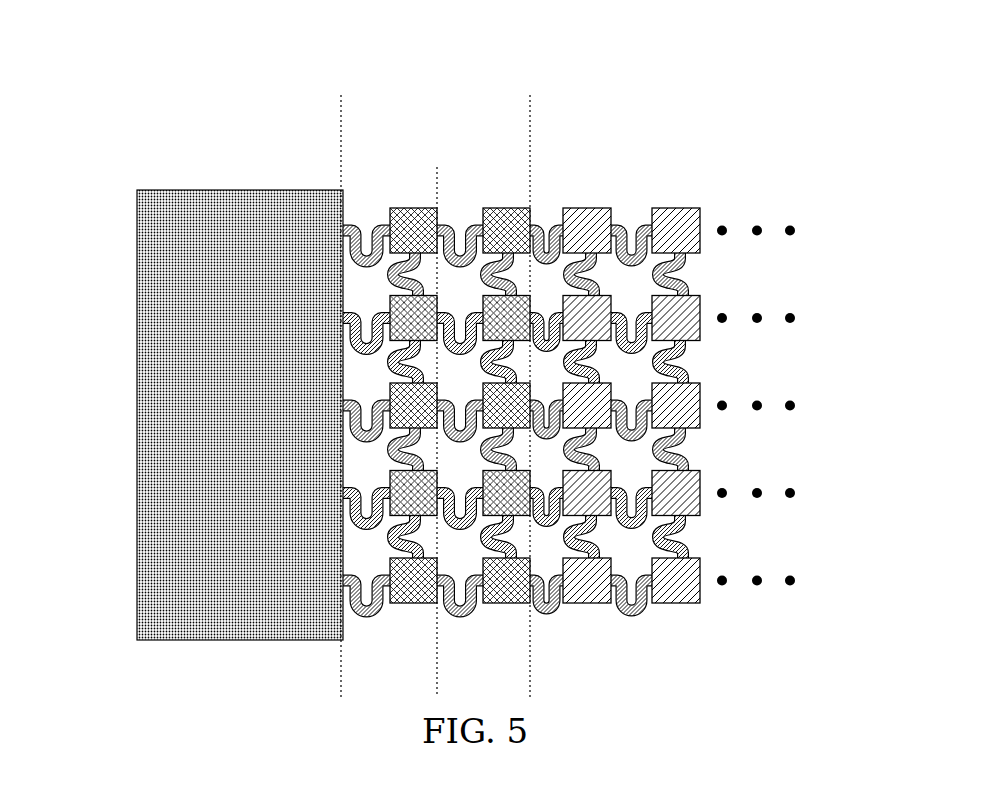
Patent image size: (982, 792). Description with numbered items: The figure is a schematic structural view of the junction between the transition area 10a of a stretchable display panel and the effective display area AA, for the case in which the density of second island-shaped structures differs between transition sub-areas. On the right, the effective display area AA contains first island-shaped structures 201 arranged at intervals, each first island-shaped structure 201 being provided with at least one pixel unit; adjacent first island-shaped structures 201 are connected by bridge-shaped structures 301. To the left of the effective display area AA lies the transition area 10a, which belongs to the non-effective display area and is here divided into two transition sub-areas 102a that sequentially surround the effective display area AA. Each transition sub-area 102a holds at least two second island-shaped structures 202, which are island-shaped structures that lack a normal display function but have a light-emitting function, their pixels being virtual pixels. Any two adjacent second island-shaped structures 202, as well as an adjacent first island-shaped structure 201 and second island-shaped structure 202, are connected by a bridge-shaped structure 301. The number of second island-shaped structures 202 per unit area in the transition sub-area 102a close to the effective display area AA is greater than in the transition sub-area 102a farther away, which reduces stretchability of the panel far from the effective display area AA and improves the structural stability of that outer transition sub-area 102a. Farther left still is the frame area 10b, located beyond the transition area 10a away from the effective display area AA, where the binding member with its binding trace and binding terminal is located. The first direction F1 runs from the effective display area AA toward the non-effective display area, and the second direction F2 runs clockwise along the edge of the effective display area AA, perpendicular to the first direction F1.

The frame area 10b is at (331, 138).
The transition area 10a is at (520, 138).
The transition sub-area 102a is at (520, 185).
The effective display area AA is at (790, 133).
The second island-shaped structure 202 is at (411, 604).
The first island-shaped structure 201 is at (585, 603).
The bridge-shaped structure 301 is at (641, 603).
The first direction F1 is at (772, 93).
The second direction F2 is at (779, 27).